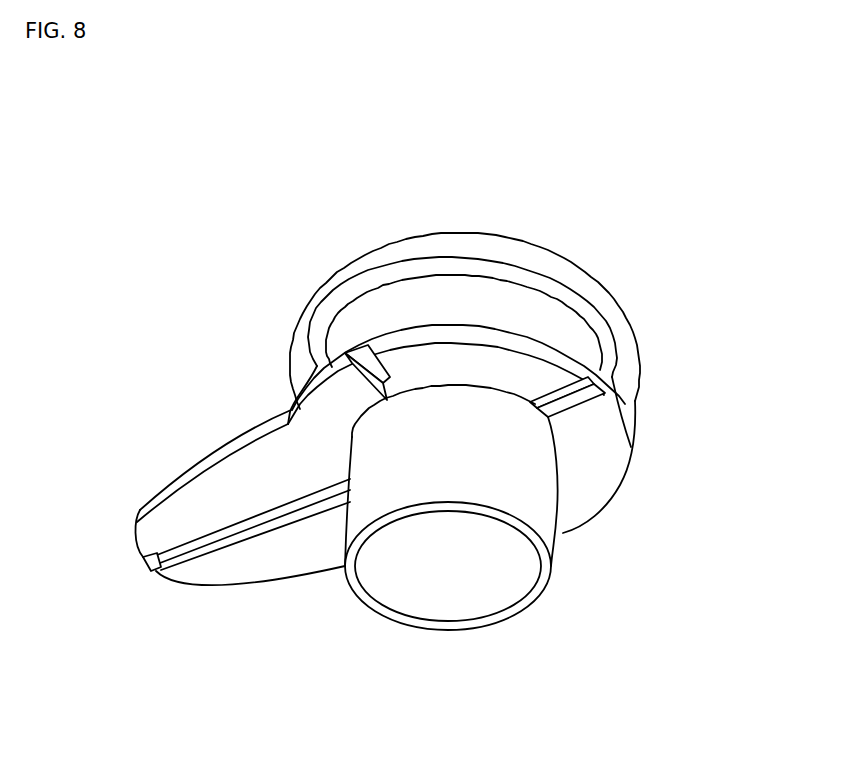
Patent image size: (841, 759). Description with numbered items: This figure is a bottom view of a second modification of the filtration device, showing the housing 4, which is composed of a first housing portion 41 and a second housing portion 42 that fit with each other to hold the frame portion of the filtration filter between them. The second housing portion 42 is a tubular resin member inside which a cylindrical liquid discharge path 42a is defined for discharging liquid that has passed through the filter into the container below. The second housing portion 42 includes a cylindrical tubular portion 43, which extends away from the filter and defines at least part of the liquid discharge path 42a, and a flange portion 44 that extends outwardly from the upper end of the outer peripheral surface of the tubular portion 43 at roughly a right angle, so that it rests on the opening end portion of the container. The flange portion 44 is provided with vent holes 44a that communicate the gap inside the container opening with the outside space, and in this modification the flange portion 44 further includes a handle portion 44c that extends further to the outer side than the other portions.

The housing 4 is at (710, 246).
The first housing portion 41 is at (577, 275).
The second housing portion 42 is at (554, 357).
The liquid discharge path 42a is at (392, 590).
The tubular portion 43 is at (528, 505).
The flange portion 44 is at (607, 453).
The vent hole 44a is at (358, 354).
The handle portion 44c is at (220, 487).